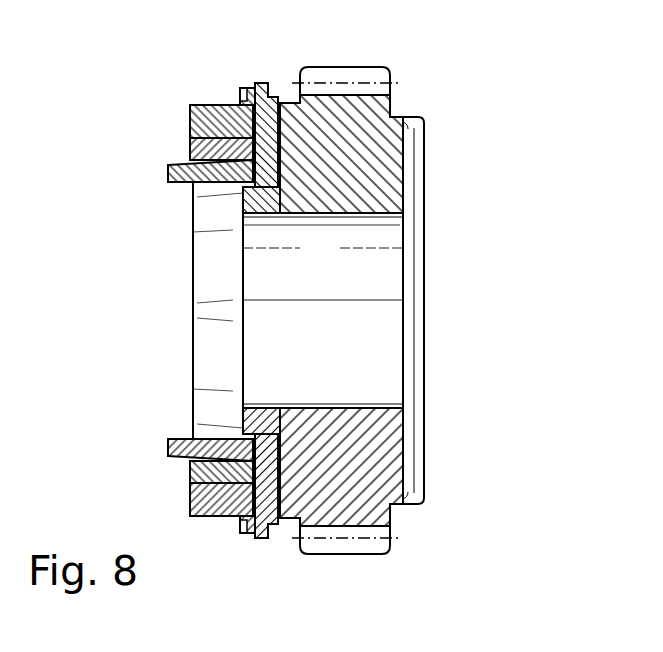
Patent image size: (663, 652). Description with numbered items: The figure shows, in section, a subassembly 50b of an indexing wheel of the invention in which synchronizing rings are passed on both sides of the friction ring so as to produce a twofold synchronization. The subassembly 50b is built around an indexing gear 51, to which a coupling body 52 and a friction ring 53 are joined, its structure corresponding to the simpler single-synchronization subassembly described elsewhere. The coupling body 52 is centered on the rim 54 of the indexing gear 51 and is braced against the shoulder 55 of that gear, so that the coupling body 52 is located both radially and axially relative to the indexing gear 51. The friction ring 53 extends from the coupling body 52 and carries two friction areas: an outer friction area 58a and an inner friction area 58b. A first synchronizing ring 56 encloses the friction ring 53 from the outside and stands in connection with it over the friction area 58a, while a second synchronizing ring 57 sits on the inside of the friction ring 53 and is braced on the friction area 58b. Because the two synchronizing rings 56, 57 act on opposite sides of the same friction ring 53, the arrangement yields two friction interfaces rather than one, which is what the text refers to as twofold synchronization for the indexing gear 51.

The subassembly 50b is at (448, 212).
The indexing gear 51 is at (345, 77).
The coupling body 52 is at (270, 88).
The friction ring 53 is at (190, 150).
The rim 54 is at (242, 213).
The shoulder 55 is at (283, 190).
The synchronizing ring 56 is at (190, 124).
The synchronizing ring 57 is at (168, 173).
The friction area 58a is at (220, 128).
The friction area 58b is at (220, 132).